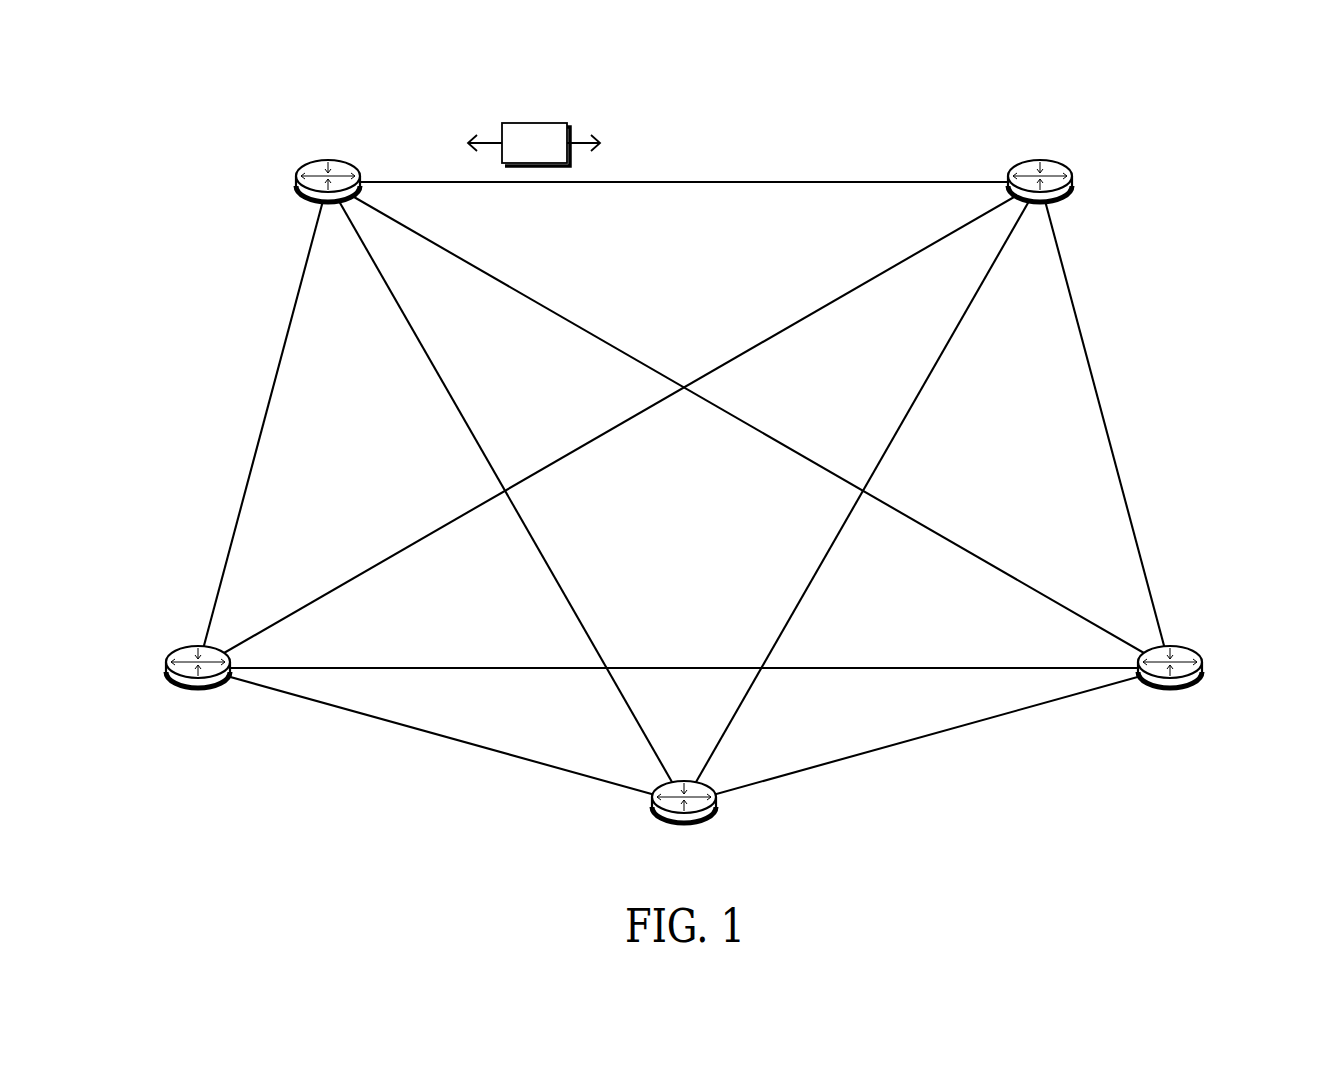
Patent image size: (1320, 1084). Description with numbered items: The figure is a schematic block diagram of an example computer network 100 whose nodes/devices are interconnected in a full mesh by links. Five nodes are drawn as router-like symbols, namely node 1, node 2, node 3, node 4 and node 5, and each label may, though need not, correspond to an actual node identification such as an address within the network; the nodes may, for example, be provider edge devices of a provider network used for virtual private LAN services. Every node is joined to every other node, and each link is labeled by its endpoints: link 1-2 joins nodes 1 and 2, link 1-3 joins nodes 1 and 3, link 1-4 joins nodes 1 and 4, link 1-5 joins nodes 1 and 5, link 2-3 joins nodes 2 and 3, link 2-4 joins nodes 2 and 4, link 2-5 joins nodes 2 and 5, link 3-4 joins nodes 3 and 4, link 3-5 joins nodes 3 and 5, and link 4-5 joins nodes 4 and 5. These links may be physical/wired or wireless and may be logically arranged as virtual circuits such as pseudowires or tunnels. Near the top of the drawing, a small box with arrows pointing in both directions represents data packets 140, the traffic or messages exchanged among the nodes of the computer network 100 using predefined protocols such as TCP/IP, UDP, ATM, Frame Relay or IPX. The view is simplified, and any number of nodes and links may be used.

The computer network 100 is at (736, 445).
The data packets 140 is at (534, 144).
The node 1 is at (315, 148).
The node 2 is at (1055, 148).
The node 3 is at (1183, 634).
The node 4 is at (712, 831).
The node 5 is at (185, 635).
The link 1-2 is at (684, 167).
The link 1-3 is at (749, 425).
The link 1-4 is at (506, 492).
The link 1-5 is at (263, 425).
The link 2-3 is at (1105, 425).
The link 2-4 is at (862, 492).
The link 2-5 is at (619, 425).
The link 3-4 is at (927, 735).
The link 3-5 is at (684, 653).
The link 4-5 is at (441, 735).